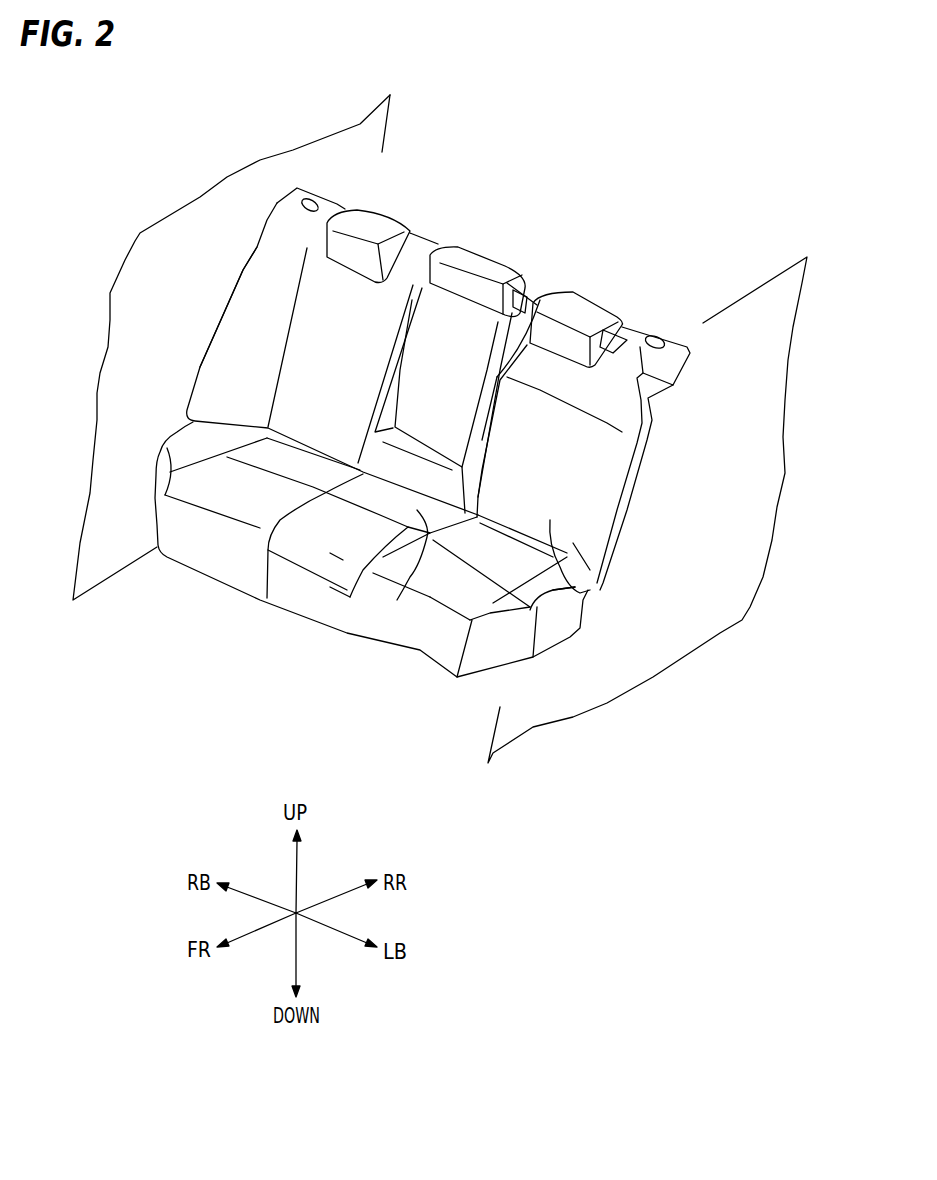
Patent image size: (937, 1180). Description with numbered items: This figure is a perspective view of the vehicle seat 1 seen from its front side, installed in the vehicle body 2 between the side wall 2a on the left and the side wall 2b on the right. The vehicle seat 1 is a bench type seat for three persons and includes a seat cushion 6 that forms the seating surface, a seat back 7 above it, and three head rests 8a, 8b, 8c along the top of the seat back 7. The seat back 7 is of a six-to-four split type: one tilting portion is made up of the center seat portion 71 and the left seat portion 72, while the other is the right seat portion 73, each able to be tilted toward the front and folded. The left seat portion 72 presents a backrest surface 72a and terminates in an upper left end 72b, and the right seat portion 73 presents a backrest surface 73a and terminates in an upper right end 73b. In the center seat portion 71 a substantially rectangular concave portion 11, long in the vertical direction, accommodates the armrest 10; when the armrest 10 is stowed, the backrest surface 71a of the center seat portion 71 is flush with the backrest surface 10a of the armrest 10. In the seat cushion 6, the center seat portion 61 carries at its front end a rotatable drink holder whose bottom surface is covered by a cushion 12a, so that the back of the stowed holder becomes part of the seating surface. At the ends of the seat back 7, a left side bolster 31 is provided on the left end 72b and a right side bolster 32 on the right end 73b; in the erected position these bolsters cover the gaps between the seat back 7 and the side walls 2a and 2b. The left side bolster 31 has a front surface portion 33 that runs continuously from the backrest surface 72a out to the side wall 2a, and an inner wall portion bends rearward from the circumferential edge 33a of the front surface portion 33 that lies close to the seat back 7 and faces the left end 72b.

The vehicle seat 1 is at (438, 200).
The vehicle body 2 is at (440, 429).
The side wall 2a is at (783, 270).
The side wall 2b is at (200, 198).
The seat cushion 6 is at (420, 648).
The center seat portion 61 is at (422, 537).
The seat back 7 is at (548, 489).
The center seat portion 71 is at (503, 373).
The backrest surface 71a is at (507, 377).
The left seat portion 72 is at (593, 397).
The backrest surface 72a is at (560, 467).
The left end 72b is at (622, 432).
The right seat portion 73 is at (320, 343).
The backrest surface 73a is at (343, 395).
The right end 73b is at (297, 307).
The head rest 8a is at (473, 253).
The head rest 8b is at (607, 305).
The head rest 8c is at (378, 208).
The armrest 10 is at (570, 257).
The backrest surface 10a is at (500, 373).
The concave portion 11 is at (442, 357).
The cushion 12a is at (313, 572).
The left side bolster 31 is at (640, 541).
The right side bolster 32 is at (188, 373).
The front surface portion 33 is at (597, 547).
The circumferential edge 33a is at (557, 598).